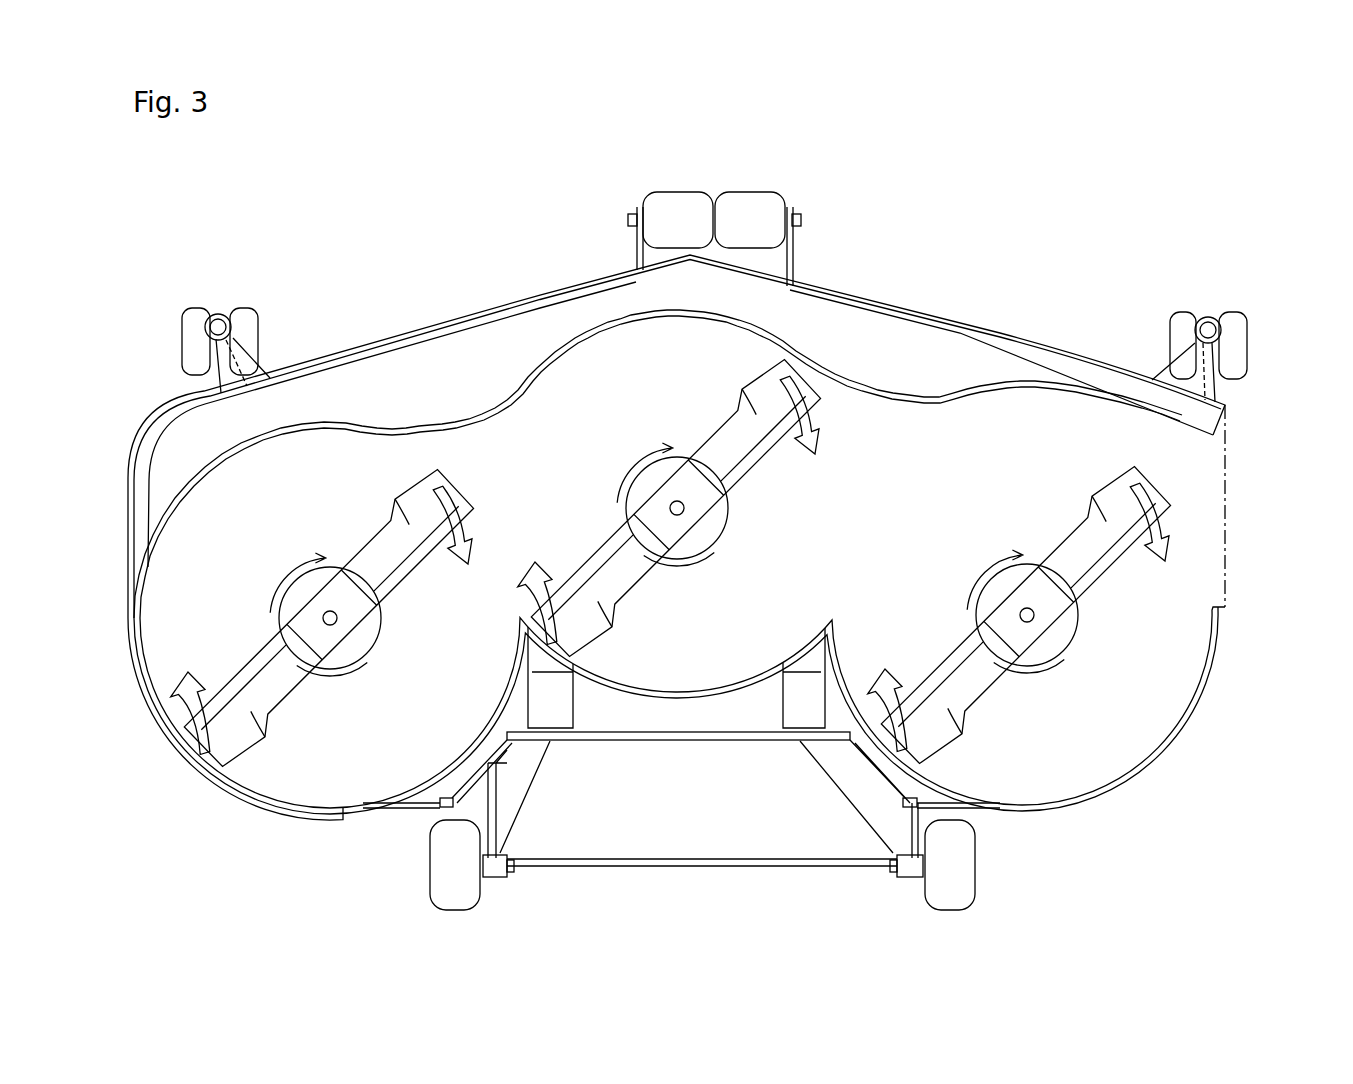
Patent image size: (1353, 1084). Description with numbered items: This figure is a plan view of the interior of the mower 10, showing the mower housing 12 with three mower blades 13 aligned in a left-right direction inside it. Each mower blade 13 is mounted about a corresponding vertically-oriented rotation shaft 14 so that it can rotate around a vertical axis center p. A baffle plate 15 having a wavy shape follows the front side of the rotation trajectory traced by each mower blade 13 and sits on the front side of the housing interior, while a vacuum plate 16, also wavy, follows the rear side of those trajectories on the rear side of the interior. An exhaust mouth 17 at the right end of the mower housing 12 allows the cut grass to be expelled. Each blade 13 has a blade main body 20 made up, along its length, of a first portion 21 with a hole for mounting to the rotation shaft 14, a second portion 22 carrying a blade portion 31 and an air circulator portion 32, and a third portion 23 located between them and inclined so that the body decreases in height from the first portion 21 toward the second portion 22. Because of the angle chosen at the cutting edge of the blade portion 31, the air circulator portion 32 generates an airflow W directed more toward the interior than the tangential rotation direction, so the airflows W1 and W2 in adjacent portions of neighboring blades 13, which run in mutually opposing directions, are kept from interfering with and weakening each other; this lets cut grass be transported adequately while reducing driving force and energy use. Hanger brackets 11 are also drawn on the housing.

The mower 10 is at (427, 273).
The hanger bracket 11 is at (190, 310).
The mower housing 12 is at (980, 335).
The mower blade 13 is at (689, 563).
The rotation shaft 14 is at (338, 622).
The baffle plate 15 is at (977, 404).
The vacuum plate 16 is at (757, 668).
The exhaust mouth 17 is at (1232, 554).
The blade main body 20 is at (395, 608).
The first portion 21 is at (312, 603).
The second portion 22 is at (364, 550).
The third portion 23 is at (337, 567).
The blade portion 31 is at (421, 557).
The air circulator portion 32 is at (415, 496).
The airflow W is at (693, 565).
The airflow W1 is at (470, 528).
The airflow W2 is at (186, 666).